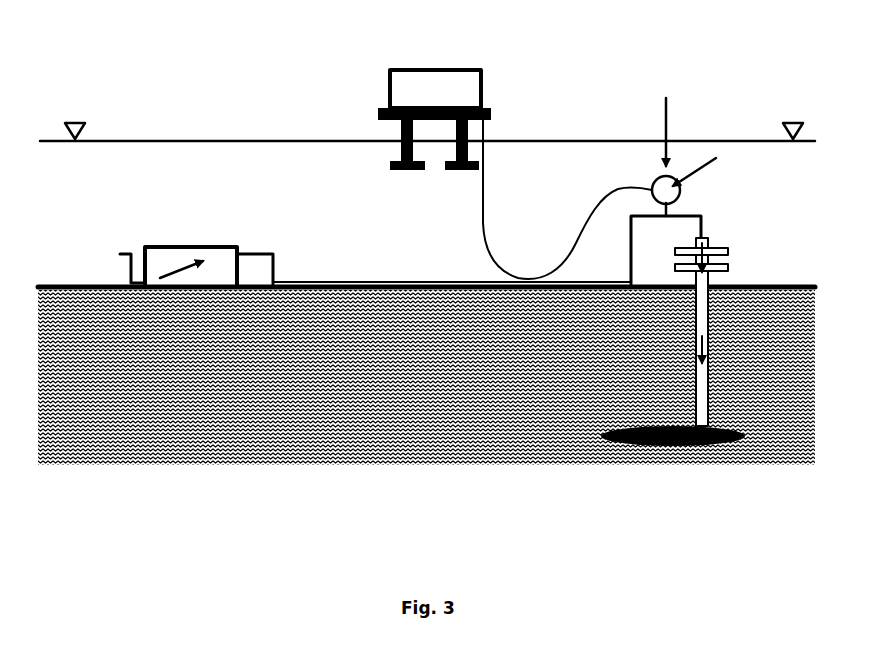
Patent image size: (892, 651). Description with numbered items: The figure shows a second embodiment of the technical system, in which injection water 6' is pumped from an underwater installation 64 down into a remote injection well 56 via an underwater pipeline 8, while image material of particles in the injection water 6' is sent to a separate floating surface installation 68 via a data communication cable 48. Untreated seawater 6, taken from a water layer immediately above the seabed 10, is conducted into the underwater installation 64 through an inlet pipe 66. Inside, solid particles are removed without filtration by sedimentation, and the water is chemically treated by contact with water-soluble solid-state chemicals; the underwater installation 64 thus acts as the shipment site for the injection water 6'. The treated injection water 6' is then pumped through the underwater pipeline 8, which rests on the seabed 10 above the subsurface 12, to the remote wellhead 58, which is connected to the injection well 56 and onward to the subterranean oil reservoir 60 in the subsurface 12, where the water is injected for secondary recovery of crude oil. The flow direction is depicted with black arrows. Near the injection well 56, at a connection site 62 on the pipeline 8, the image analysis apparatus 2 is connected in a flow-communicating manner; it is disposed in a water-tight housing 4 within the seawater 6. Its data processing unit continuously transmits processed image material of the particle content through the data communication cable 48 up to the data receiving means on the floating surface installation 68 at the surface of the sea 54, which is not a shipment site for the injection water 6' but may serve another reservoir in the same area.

The image analysis apparatus 2 is at (701, 165).
The water-tight housing 4 is at (648, 172).
The seawater 6 is at (429, 231).
The injection water 6' is at (450, 248).
The underwater pipeline 8 is at (268, 252).
The seabed 10 is at (793, 276).
The subsurface 12 is at (182, 385).
The data communication cable 48 is at (601, 203).
The surface of the sea 54 is at (218, 131).
The injection well 56 is at (699, 380).
The wellhead 58 is at (712, 240).
The oil reservoir 60 is at (640, 438).
The connection site 62 is at (666, 121).
The underwater installation 64 is at (176, 246).
The inlet pipe 66 is at (118, 244).
The floating surface installation 68 is at (424, 70).